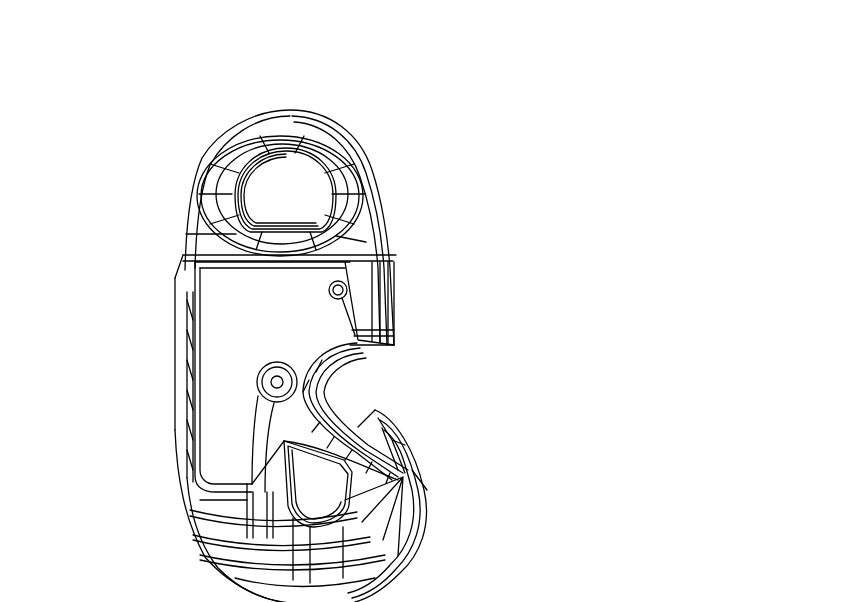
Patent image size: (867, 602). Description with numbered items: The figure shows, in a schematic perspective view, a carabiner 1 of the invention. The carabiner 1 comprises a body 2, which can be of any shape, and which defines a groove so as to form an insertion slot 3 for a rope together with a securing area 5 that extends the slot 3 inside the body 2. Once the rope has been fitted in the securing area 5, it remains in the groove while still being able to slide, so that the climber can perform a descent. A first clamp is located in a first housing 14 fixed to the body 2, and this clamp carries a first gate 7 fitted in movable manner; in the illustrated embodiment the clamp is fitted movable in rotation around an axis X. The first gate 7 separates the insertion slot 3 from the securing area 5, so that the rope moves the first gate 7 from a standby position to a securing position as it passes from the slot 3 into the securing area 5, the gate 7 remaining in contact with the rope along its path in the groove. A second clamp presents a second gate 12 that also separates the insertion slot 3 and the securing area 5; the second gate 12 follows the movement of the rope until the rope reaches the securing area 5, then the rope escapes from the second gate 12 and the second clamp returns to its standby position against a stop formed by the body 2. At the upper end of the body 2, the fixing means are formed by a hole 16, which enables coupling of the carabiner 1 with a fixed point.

The carabiner 1 is at (343, 84).
The body 2 is at (232, 128).
The slot 3 is at (507, 366).
The securing area 5 is at (310, 481).
The first gate 7 is at (377, 457).
The second gate 12 is at (343, 404).
The first housing 14 is at (360, 277).
The hole 16 is at (286, 196).
The axis X is at (275, 383).